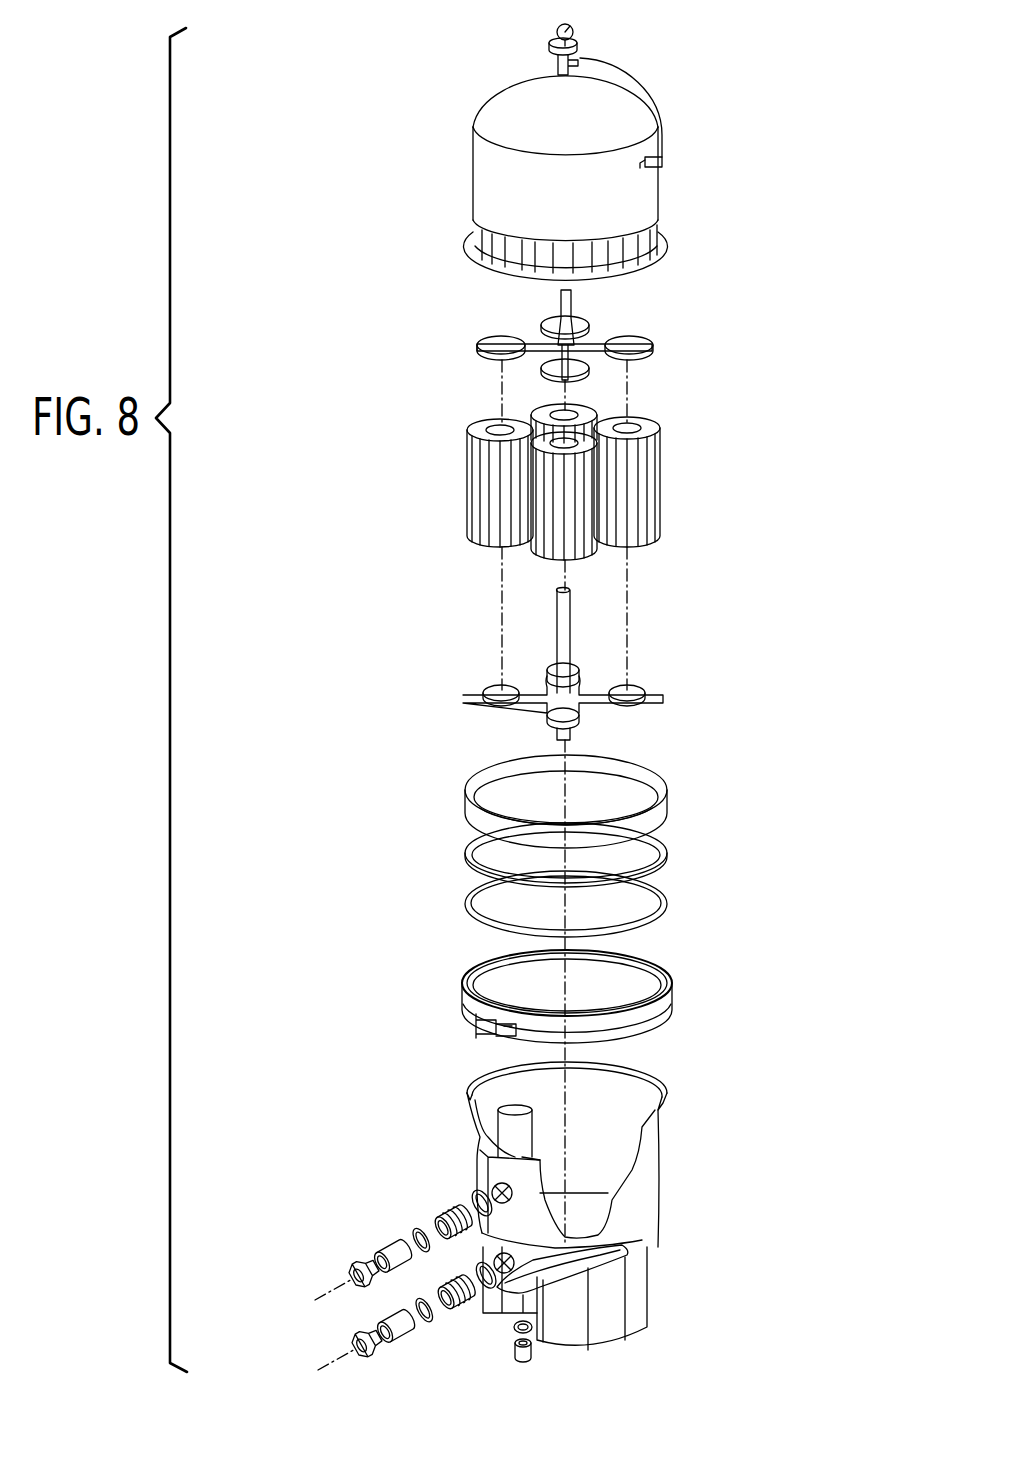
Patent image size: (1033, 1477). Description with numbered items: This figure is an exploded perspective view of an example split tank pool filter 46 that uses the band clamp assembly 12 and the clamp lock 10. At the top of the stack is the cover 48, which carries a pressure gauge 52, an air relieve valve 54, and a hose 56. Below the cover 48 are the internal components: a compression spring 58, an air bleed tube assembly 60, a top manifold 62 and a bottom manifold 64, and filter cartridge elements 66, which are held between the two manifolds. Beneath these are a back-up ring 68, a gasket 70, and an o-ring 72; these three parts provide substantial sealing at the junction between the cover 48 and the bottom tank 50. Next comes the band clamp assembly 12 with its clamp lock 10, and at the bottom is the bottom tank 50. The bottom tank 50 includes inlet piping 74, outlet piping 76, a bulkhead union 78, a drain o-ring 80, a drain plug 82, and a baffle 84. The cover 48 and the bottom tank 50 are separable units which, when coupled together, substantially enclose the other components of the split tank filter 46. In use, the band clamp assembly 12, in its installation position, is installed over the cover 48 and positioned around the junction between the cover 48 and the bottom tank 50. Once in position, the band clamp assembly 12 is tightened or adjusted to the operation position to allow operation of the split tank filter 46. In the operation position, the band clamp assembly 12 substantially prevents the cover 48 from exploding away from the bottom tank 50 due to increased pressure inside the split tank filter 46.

The clamp lock 10 is at (490, 1034).
The band clamp assembly 12 is at (569, 1013).
The split tank pool filter 46 is at (440, 78).
The cover 48 is at (474, 182).
The bottom tank 50 is at (565, 1206).
The pressure gauge 52 is at (574, 30).
The air relieve valve 54 is at (578, 45).
The hose 56 is at (640, 100).
The compression spring 58 is at (578, 322).
The air bleed tube assembly 60 is at (446, 290).
The top manifold 62 is at (650, 346).
The bottom manifold 64 is at (641, 690).
The filter cartridge elements 66 is at (661, 486).
The back-up ring 68 is at (667, 796).
The gasket 70 is at (667, 849).
The o-ring 72 is at (667, 897).
The inlet piping 74 is at (474, 1195).
The outlet piping 76 is at (458, 1306).
The bulkhead union 78 is at (300, 1262).
The drain o-ring 80 is at (513, 1329).
The drain plug 82 is at (534, 1357).
The baffle 84 is at (510, 1137).